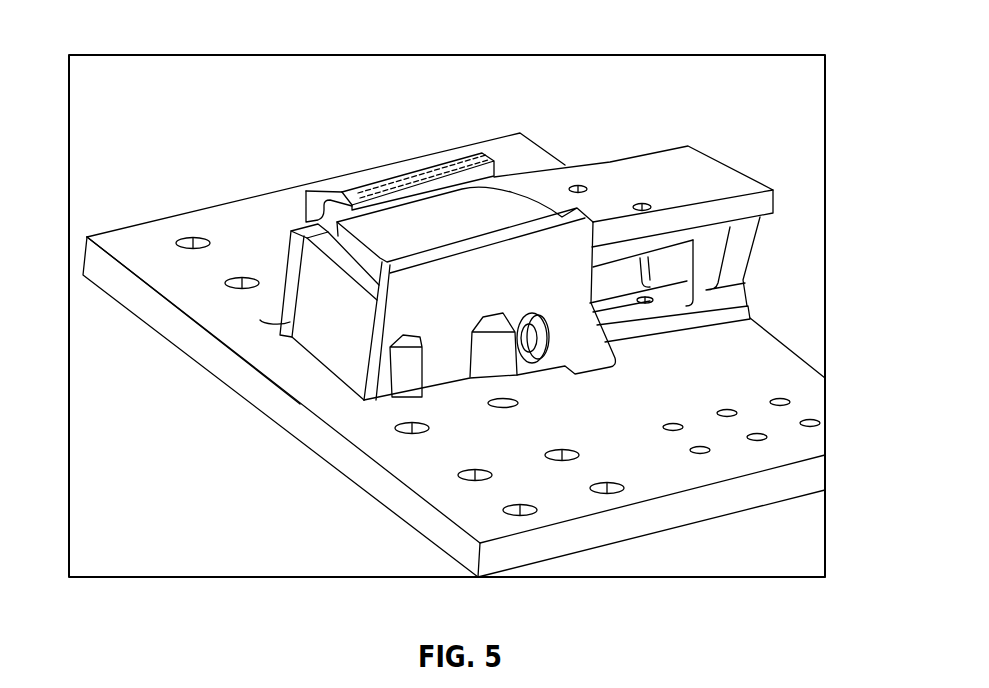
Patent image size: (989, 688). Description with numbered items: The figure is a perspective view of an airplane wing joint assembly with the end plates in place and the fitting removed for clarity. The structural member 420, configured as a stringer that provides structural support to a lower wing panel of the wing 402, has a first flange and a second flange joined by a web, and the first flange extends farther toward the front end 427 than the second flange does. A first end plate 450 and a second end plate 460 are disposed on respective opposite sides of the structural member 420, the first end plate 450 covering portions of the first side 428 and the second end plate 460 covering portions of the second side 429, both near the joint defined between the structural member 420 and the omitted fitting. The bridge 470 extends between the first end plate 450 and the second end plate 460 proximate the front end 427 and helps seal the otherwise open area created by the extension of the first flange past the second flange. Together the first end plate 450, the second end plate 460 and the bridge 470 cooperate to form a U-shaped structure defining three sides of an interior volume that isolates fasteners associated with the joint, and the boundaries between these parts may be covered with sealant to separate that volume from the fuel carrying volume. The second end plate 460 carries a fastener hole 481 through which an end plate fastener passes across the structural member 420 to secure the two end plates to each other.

The wing 402 is at (557, 493).
The structural member 420 is at (734, 190).
The front end 427 is at (296, 367).
The first side 428 is at (748, 602).
The second side 429 is at (125, 48).
The first end plate 450 is at (443, 375).
The second end plate 460 is at (447, 174).
The bridge 470 is at (350, 348).
The fastener hole 481 is at (527, 375).